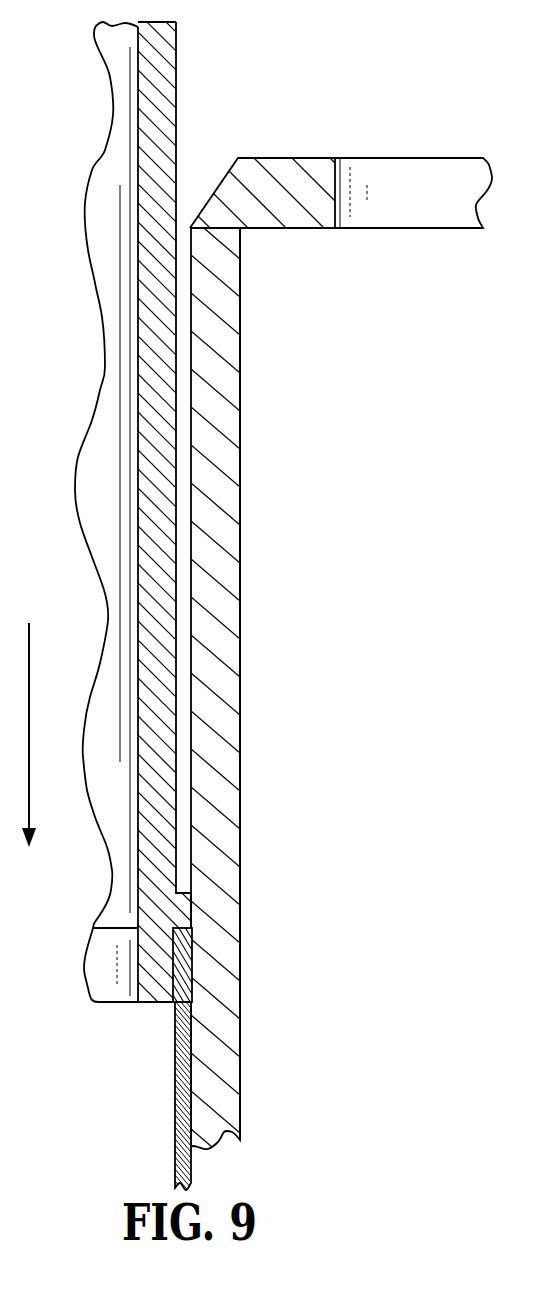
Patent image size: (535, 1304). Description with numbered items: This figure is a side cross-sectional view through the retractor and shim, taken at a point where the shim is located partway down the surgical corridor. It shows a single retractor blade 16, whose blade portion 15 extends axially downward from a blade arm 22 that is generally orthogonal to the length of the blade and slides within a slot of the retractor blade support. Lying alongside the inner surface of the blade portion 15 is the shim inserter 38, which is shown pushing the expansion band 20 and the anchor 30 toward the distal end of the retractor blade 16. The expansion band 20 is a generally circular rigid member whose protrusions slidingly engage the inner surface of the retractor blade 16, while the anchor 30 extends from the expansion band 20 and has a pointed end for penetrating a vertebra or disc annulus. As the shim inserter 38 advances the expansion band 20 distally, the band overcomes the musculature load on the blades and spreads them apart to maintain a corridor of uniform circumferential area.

The blade portion 15 is at (240, 612).
The retractor blade 16 is at (288, 519).
The expansion band 20 is at (192, 948).
The blade arm 22 is at (322, 158).
The anchor 30 is at (167, 1081).
The shim inserter 38 is at (184, 65).